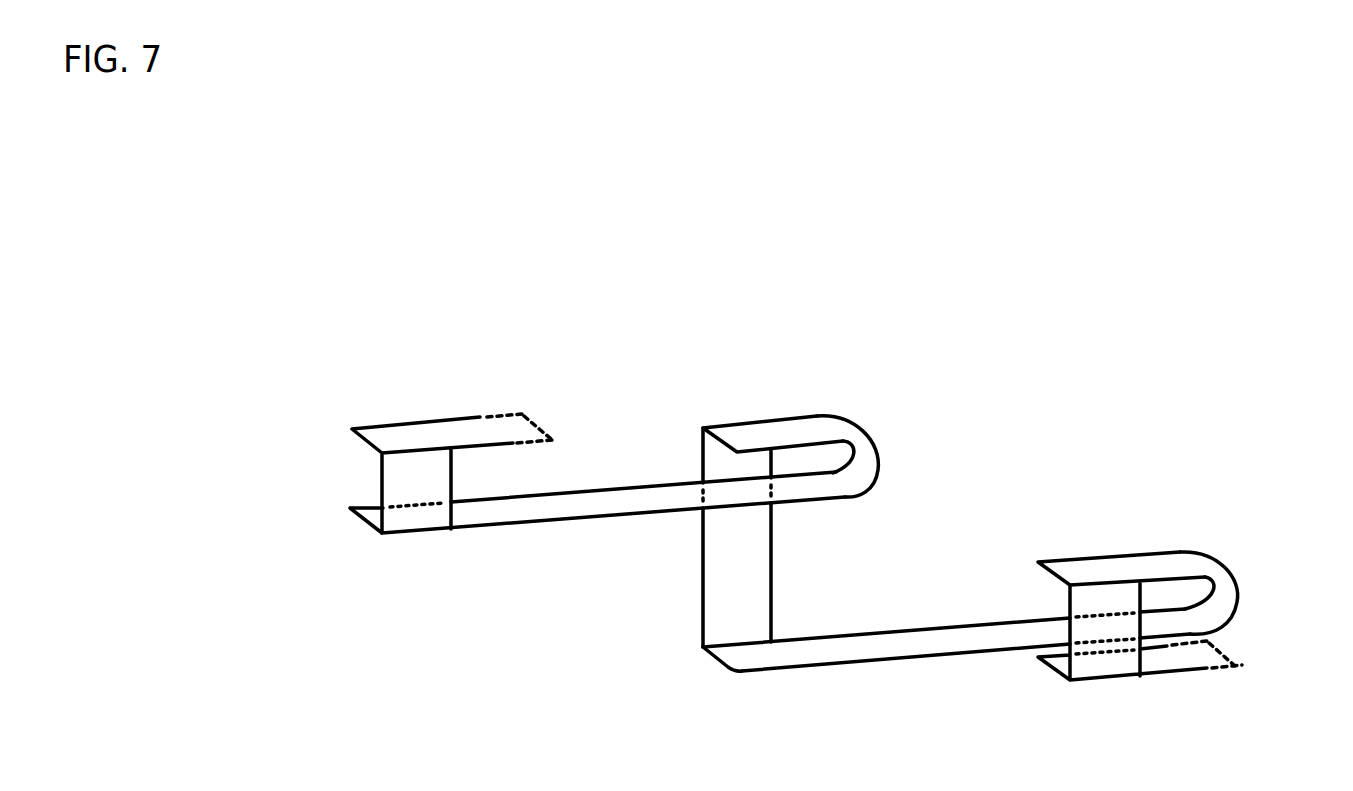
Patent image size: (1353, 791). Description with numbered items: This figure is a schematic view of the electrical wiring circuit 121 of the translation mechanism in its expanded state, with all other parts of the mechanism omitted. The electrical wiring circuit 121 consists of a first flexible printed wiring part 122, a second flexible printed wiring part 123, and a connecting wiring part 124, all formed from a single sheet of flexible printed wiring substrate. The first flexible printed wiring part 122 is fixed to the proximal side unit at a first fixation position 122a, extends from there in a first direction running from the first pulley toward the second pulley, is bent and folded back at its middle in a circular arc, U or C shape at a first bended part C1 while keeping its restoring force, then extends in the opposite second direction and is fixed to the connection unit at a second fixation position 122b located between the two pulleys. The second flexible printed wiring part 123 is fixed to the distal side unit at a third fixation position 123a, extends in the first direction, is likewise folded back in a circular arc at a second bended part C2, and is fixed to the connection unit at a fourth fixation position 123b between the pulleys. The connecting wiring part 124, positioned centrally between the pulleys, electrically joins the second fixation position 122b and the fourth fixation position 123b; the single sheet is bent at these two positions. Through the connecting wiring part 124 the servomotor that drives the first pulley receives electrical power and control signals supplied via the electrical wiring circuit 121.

The electrical wiring circuit 121 is at (876, 392).
The first flexible printed wiring part 122 is at (607, 508).
The first fixation position 122a is at (411, 518).
The second fixation position 122b is at (737, 416).
The second flexible printed wiring part 123 is at (906, 637).
The third fixation position 123a is at (1102, 592).
The fourth fixation position 123b is at (745, 655).
The connecting wiring part 124 is at (717, 578).
The first bended part C1 is at (887, 468).
The second bended part C2 is at (1246, 599).